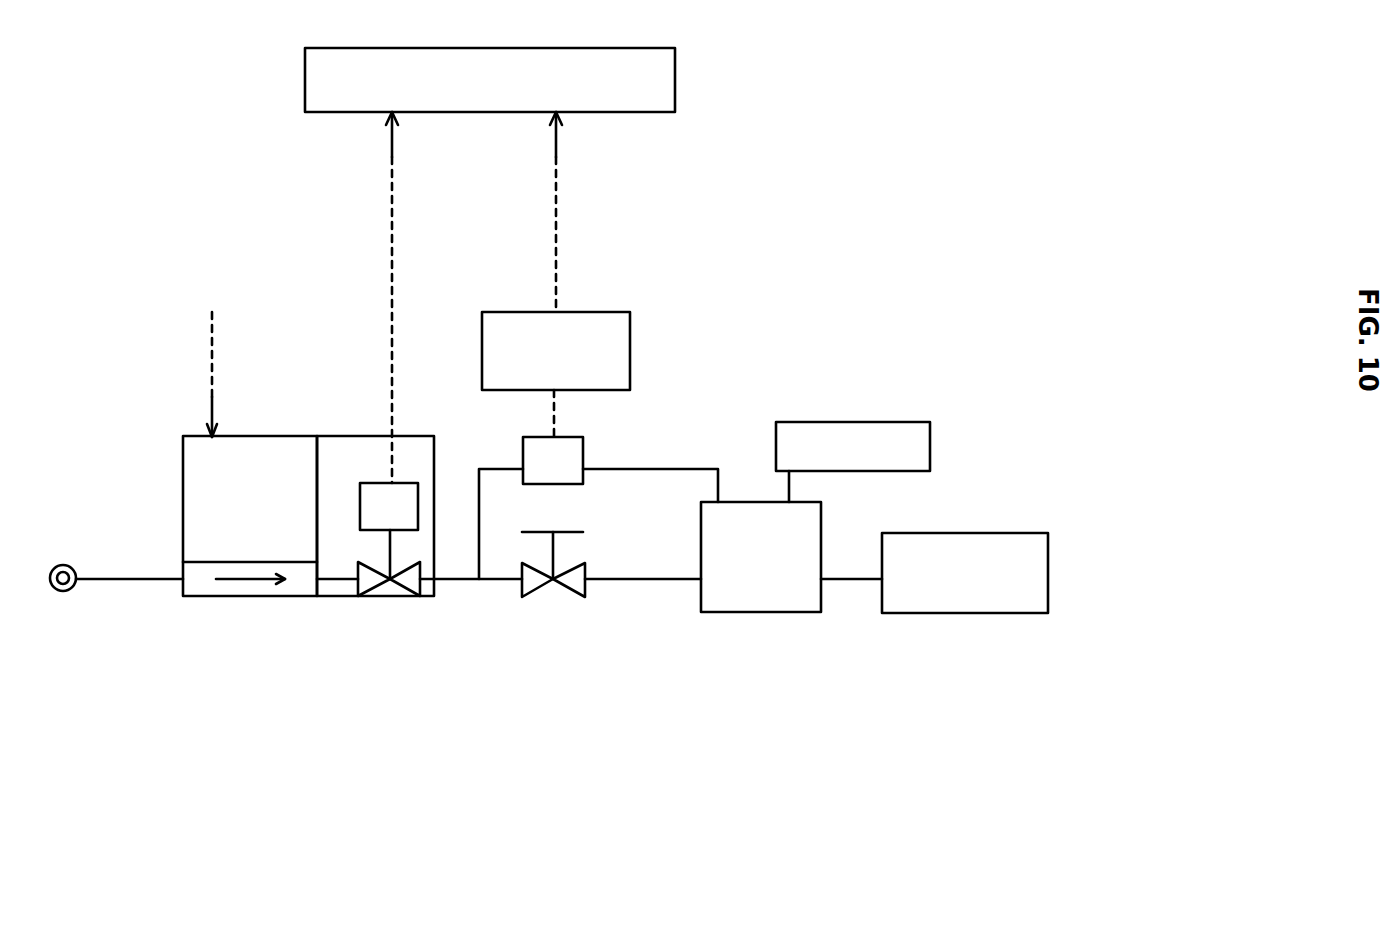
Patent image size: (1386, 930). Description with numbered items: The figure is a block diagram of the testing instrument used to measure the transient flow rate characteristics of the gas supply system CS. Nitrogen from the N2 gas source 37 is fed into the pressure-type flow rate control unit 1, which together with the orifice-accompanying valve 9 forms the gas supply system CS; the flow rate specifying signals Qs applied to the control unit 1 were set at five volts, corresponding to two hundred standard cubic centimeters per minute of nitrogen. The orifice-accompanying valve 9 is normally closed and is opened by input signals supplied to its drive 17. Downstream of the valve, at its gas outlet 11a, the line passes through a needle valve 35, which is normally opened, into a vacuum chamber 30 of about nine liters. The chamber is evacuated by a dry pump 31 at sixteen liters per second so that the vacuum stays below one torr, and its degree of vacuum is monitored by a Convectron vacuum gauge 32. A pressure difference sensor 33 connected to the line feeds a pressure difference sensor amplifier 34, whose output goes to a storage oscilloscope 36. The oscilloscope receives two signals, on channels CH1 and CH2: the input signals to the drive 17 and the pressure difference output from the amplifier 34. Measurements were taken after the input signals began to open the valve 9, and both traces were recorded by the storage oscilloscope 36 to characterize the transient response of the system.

The pressure-type flow rate control unit 1 is at (258, 588).
The orifice-accompanying valve 9 is at (373, 584).
The gas outlet 11a is at (462, 581).
The drive 17 is at (403, 507).
The vacuum chamber 30 is at (807, 542).
The dry pump 31 is at (1020, 572).
The Convectron vacuum gauge 32 is at (915, 448).
The pressure difference sensor 33 is at (572, 457).
The pressure difference sensor amplifier 34 is at (607, 350).
The needle valve 35 is at (573, 586).
The storage oscilloscope 36 is at (657, 95).
The N2 gas source 37 is at (66, 592).
The channel 1 CH1 is at (392, 163).
The channel 2 CH2 is at (556, 163).
The flow rate specifying signals Qs is at (212, 368).
The gas supply system CS is at (375, 700).